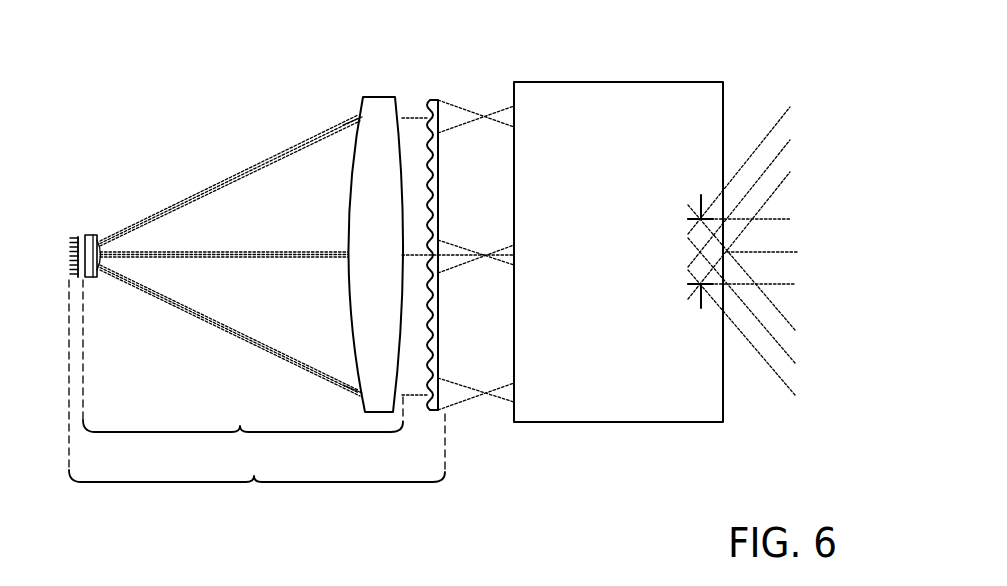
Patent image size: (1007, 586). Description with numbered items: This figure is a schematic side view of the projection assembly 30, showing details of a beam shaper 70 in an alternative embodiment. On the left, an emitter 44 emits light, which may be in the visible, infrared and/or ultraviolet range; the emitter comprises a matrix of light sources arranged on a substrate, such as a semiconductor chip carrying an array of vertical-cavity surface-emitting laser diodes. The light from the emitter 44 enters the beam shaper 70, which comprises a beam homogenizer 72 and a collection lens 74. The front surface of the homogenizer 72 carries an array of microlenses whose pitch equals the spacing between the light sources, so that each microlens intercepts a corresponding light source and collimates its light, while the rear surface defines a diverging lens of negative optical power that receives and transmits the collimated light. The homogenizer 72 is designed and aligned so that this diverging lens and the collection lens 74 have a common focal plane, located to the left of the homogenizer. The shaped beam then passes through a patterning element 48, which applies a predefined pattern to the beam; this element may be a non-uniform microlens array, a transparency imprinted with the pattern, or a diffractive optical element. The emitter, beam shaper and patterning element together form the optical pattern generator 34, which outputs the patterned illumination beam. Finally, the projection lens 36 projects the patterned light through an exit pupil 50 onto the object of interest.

The projection assembly 30 is at (226, 72).
The optical pattern generator 34 is at (257, 401).
The projection lens 36 is at (622, 82).
The emitter 44 is at (70, 247).
The patterning element 48 is at (431, 100).
The exit pupil 50 is at (690, 219).
The beam shaper 70 is at (243, 377).
The beam homogenizer 72 is at (90, 235).
The collection lens 74 is at (384, 97).